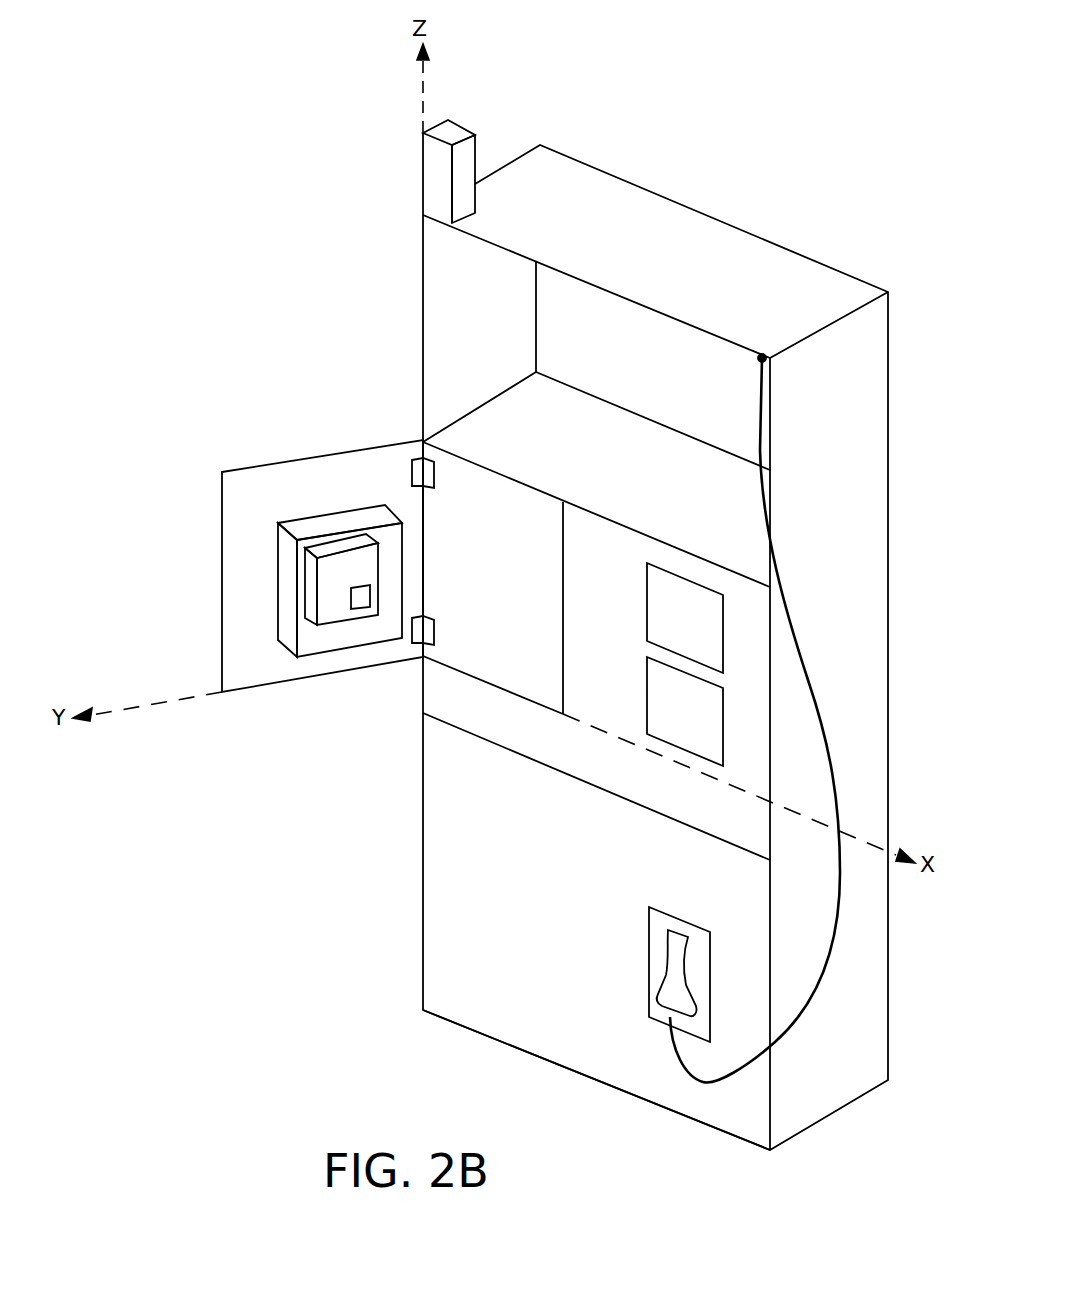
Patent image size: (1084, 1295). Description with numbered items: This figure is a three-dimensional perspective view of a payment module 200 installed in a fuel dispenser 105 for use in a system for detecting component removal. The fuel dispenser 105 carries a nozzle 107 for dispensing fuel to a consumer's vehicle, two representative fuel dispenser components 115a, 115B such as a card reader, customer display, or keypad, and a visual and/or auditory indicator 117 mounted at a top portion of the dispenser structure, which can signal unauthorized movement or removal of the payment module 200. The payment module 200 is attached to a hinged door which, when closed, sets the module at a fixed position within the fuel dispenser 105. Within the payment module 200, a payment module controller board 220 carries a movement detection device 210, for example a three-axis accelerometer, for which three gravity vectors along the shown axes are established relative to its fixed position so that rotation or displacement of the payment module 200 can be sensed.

The fuel dispenser 105 is at (828, 230).
The nozzle 107 is at (643, 952).
The fuel dispenser component 115a is at (656, 628).
The fuel dispenser component 115B is at (656, 720).
The visual and/or auditory indicator 117 is at (430, 178).
The payment module 200 is at (297, 522).
The movement detection device 210 is at (363, 587).
The payment module controller board 220 is at (310, 582).